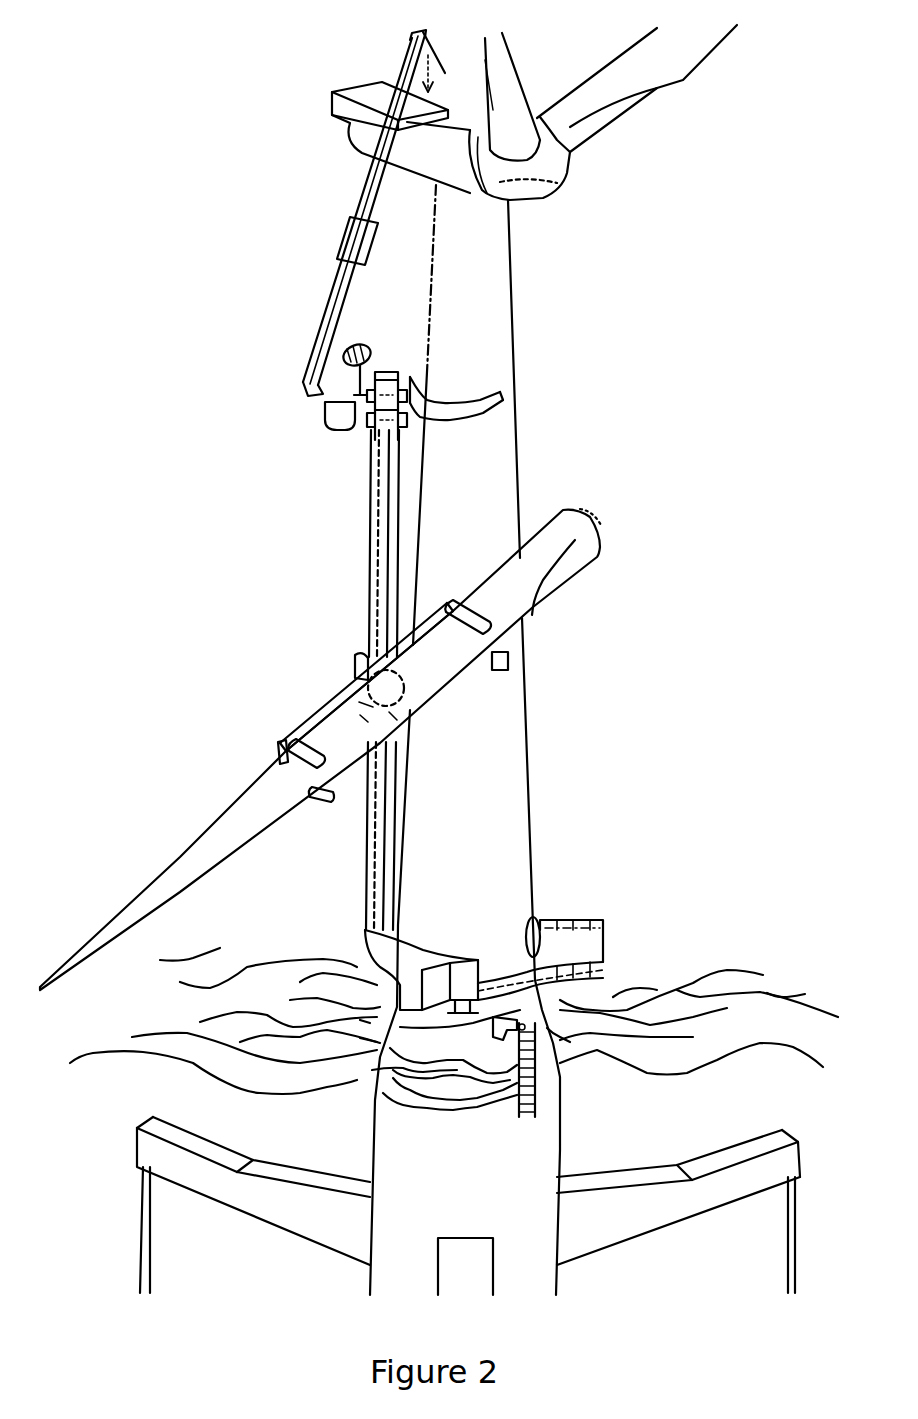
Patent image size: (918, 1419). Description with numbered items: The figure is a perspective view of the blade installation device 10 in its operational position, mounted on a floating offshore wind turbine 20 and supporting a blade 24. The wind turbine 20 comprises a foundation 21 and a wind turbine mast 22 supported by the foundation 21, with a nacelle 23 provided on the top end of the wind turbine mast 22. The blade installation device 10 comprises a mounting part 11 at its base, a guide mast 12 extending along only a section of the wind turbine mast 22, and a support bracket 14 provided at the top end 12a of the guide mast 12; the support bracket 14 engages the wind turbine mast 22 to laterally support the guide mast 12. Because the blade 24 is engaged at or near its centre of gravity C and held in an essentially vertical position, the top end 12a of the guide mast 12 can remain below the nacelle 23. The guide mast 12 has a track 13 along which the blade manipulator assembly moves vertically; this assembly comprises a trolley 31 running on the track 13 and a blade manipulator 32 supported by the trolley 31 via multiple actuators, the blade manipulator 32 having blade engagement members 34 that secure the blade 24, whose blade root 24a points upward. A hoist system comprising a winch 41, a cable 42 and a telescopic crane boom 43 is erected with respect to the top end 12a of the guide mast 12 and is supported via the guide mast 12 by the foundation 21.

The blade installation device 10 is at (398, 521).
The mounting part 11 is at (360, 940).
The guide mast 12 is at (373, 517).
The top end of the guide mast 12a is at (387, 367).
The track 13 is at (380, 560).
The support bracket 14 is at (488, 425).
The offshore wind turbine 20 is at (420, 660).
The foundation 21 is at (542, 1142).
The wind turbine mast 22 is at (503, 270).
The nacelle 23 is at (334, 132).
The blade 24 is at (392, 729).
The blade root 24a is at (612, 511).
The trolley 31 is at (350, 665).
The blade manipulator 32 is at (293, 715).
The blade engagement members 34 is at (512, 660).
The winch 41 is at (358, 365).
The cable 42 is at (437, 70).
The crane boom 43 is at (347, 247).
The blade centre of gravity C is at (392, 717).